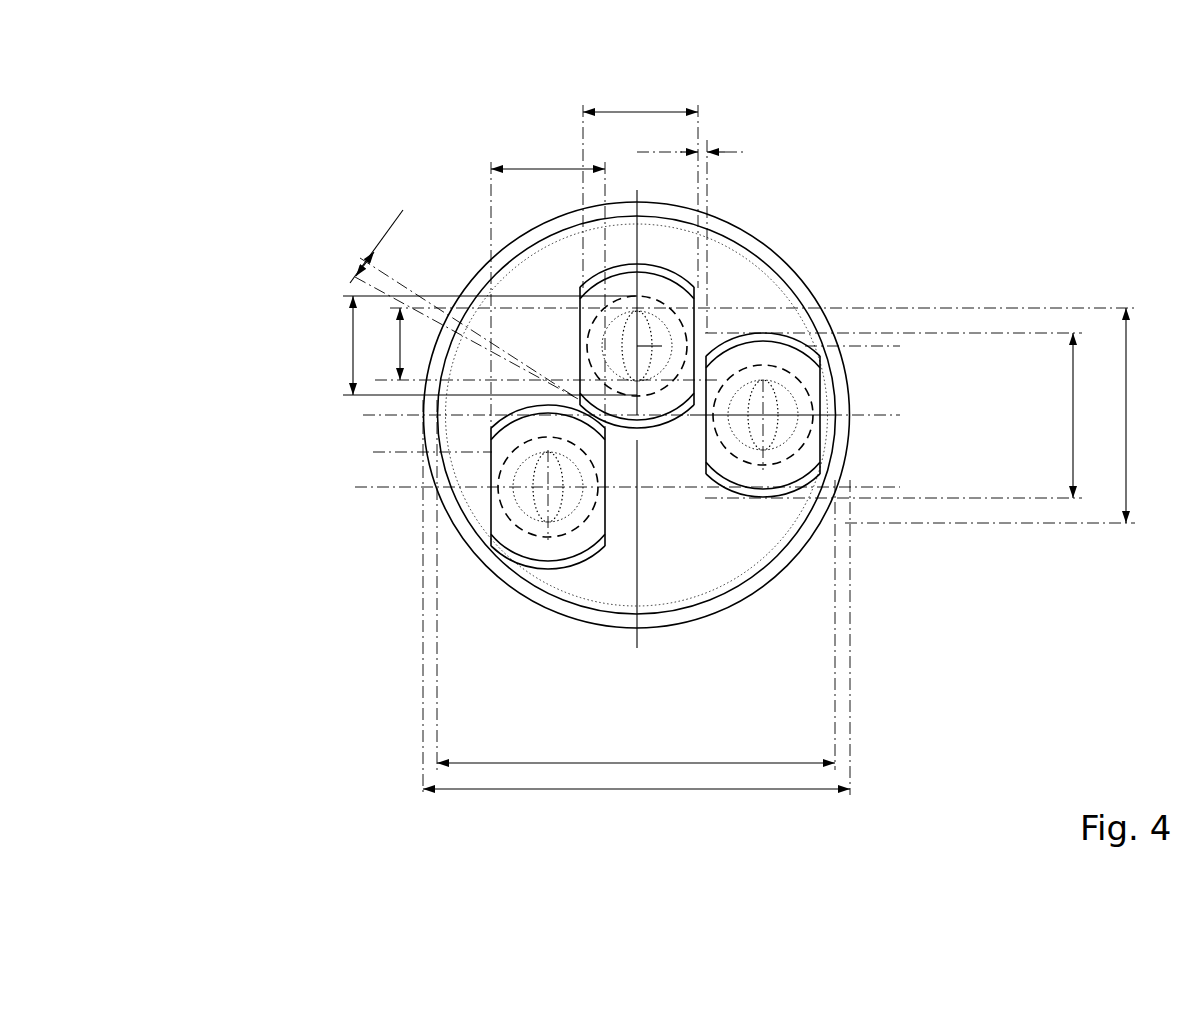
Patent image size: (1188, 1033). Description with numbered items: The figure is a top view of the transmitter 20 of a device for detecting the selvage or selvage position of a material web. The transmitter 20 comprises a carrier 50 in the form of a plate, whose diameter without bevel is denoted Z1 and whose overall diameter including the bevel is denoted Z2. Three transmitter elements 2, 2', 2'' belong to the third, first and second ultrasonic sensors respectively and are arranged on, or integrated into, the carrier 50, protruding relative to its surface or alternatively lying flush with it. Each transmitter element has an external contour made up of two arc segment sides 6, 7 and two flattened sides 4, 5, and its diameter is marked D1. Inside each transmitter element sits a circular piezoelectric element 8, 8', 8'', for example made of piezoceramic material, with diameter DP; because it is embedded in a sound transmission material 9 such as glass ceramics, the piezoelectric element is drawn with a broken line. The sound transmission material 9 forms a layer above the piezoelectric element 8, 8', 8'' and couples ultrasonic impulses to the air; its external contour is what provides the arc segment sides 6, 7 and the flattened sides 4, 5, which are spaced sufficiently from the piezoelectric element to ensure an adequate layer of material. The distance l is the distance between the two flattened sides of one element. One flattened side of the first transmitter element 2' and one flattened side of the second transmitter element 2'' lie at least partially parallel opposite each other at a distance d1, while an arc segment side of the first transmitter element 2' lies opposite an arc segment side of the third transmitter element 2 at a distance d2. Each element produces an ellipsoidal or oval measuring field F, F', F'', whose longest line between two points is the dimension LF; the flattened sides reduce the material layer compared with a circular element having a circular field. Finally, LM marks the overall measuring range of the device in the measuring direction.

The transmitter 20 is at (320, 165).
The transmitter element 2 is at (481, 535).
The transmitter element 2' is at (751, 292).
The transmitter element 2'' is at (849, 360).
The flattened side 4 is at (606, 528).
The flattened side 5 is at (488, 487).
The arc segment side 6 is at (522, 567).
The arc segment side 7 is at (497, 423).
The piezoelectric element 8 is at (484, 575).
The piezoelectric element 8' is at (700, 276).
The piezoelectric element 8'' is at (884, 470).
The sound transmission material 9 is at (775, 478).
The carrier 50 is at (712, 560).
The measuring field F is at (438, 527).
The measuring field F' is at (749, 291).
The measuring field F'' is at (869, 358).
The distance between flattened sides l is at (594, 125).
The distance between flattened sides of first and second elements d1 is at (726, 153).
The distance between arc segment sides d2 is at (363, 246).
The diameter of piezoelectric element DP is at (477, 345).
The dimension of measuring field LF is at (384, 344).
The diameter of transmitter element D1 is at (1092, 415).
The measuring range LM is at (1144, 415).
The diameter of carrier without bevel Z1 is at (636, 749).
The overall diameter of carrier Z2 is at (636, 811).